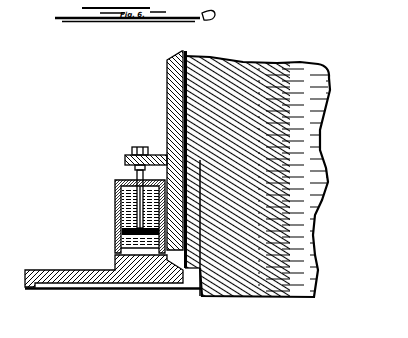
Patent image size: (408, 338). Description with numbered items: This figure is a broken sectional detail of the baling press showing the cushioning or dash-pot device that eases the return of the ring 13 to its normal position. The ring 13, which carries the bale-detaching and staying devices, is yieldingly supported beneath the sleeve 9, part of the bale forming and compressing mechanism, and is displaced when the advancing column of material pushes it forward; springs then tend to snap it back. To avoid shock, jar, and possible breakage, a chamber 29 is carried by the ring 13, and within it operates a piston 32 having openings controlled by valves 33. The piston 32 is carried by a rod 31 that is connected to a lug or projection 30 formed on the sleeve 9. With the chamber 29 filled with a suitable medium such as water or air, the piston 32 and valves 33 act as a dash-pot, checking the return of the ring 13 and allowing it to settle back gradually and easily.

The sleeve 9 is at (167, 92).
The ring 13 is at (47, 262).
The chamber 29 is at (114, 223).
The lug or projection 30 is at (126, 157).
The rod 31 is at (134, 170).
The piston 32 is at (114, 206).
The valves 33 is at (114, 236).